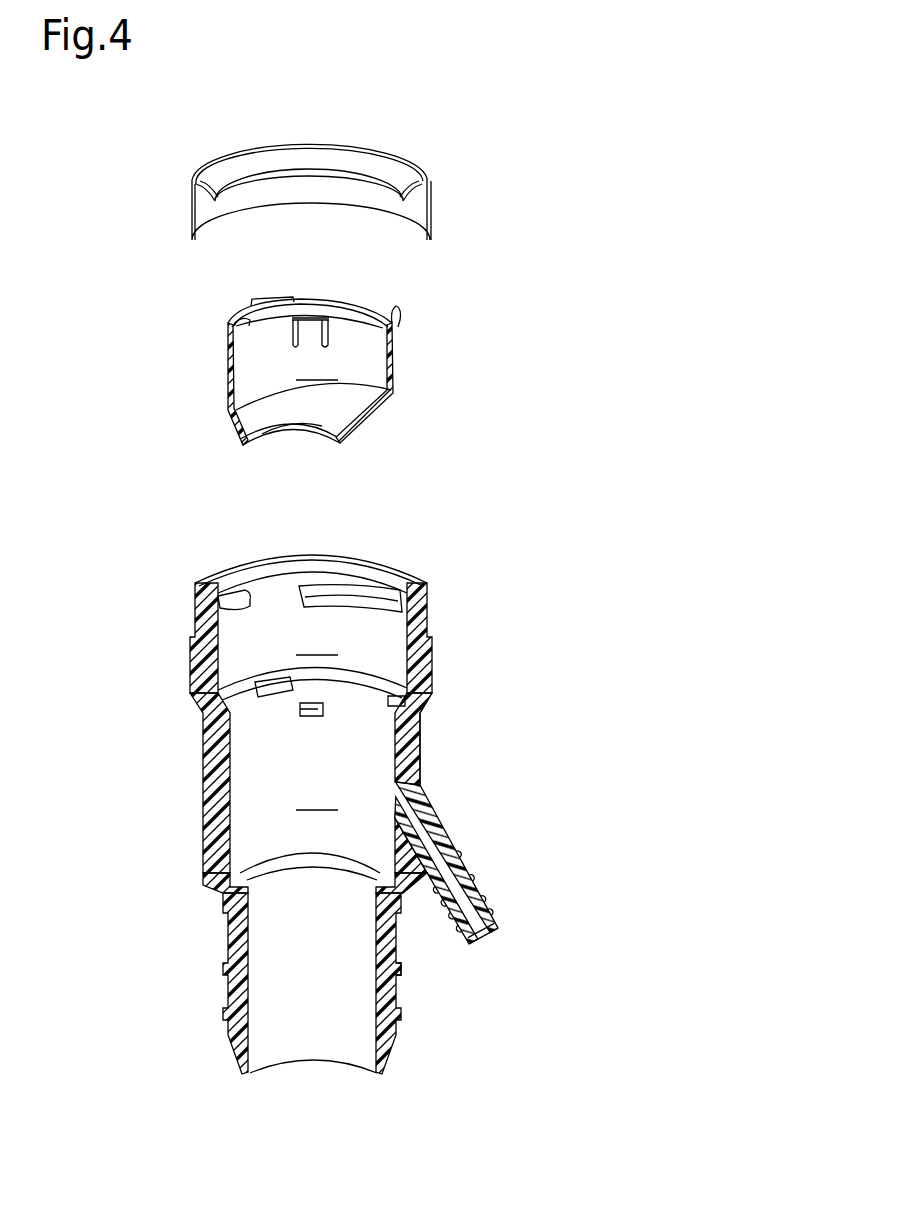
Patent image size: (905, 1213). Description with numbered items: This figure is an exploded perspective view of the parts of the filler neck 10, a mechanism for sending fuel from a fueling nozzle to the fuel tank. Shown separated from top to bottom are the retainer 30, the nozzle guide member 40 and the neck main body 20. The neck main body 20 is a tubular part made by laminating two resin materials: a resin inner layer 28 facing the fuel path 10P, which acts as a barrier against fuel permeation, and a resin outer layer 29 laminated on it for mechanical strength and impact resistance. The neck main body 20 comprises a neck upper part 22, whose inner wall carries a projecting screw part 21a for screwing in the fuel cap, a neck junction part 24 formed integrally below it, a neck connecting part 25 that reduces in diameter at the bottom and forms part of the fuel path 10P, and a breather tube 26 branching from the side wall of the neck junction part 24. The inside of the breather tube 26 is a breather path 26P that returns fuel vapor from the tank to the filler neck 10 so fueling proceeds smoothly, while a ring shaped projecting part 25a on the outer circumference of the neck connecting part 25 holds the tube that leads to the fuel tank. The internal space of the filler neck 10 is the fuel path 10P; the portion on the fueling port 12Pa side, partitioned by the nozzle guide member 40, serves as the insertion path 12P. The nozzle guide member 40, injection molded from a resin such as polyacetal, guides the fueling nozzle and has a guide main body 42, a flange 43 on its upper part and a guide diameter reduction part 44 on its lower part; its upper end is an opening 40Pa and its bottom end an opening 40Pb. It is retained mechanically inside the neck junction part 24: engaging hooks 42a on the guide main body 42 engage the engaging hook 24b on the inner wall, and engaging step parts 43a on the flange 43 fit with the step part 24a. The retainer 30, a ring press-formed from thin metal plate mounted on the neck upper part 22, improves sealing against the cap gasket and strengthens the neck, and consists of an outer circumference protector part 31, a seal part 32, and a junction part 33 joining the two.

The filler neck 10 is at (150, 191).
The neck main body 20 is at (100, 662).
The neck upper part 22 is at (193, 682).
The neck junction part 24 is at (203, 805).
The step part 24a is at (431, 682).
The engaging hook 24b is at (294, 710).
The neck connecting part 25 is at (227, 933).
The ring shaped projecting part 25a is at (405, 960).
The breather tube 26 is at (434, 811).
The breather path 26P is at (463, 857).
The resin inner layer 28 is at (421, 720).
The resin outer layer 29 is at (423, 757).
The screw part 21a is at (361, 602).
The insertion path 12P is at (317, 505).
The fueling port 12Pa is at (273, 583).
The fuel path 10P is at (317, 797).
The retainer 30 is at (507, 107).
The outer circumference protector part 31 is at (432, 205).
The seal part 32 is at (407, 178).
The junction part 33 is at (428, 176).
The nozzle guide member 40 is at (475, 305).
The opening 40Pa is at (227, 324).
The opening 40Pb is at (275, 438).
The guide main body 42 is at (393, 378).
The engaging hooks 42a is at (313, 325).
The flange 43 is at (398, 312).
The engaging step parts 43a is at (284, 298).
The guide diameter reduction part 44 is at (372, 418).